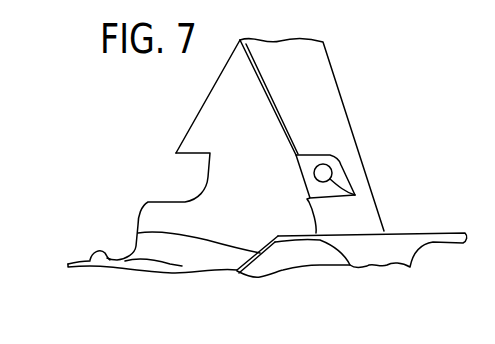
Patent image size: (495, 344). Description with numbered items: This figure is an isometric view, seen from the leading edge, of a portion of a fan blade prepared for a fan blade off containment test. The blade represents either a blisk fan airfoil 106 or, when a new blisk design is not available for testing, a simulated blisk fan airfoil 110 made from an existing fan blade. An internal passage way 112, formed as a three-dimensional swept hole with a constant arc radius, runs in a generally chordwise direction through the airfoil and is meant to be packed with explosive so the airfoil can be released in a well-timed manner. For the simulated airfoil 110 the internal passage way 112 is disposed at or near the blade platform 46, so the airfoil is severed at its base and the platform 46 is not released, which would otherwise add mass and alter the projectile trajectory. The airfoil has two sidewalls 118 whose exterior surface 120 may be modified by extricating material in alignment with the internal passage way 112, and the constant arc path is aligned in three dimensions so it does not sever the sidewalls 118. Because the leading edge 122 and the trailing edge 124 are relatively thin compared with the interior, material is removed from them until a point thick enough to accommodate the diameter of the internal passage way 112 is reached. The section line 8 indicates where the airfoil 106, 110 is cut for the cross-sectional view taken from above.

The blisk fan airfoil 106 is at (333, 134).
The simulated blisk fan airfoil 110 is at (318, 76).
The internal passage way 112 is at (356, 195).
The sidewalls 118 is at (331, 167).
The exterior surface 120 is at (253, 136).
The leading edge 122 is at (281, 119).
The trailing edge 124 is at (186, 137).
The blade platform 46 is at (87, 267).
The section line 8- 8 is at (176, 182).